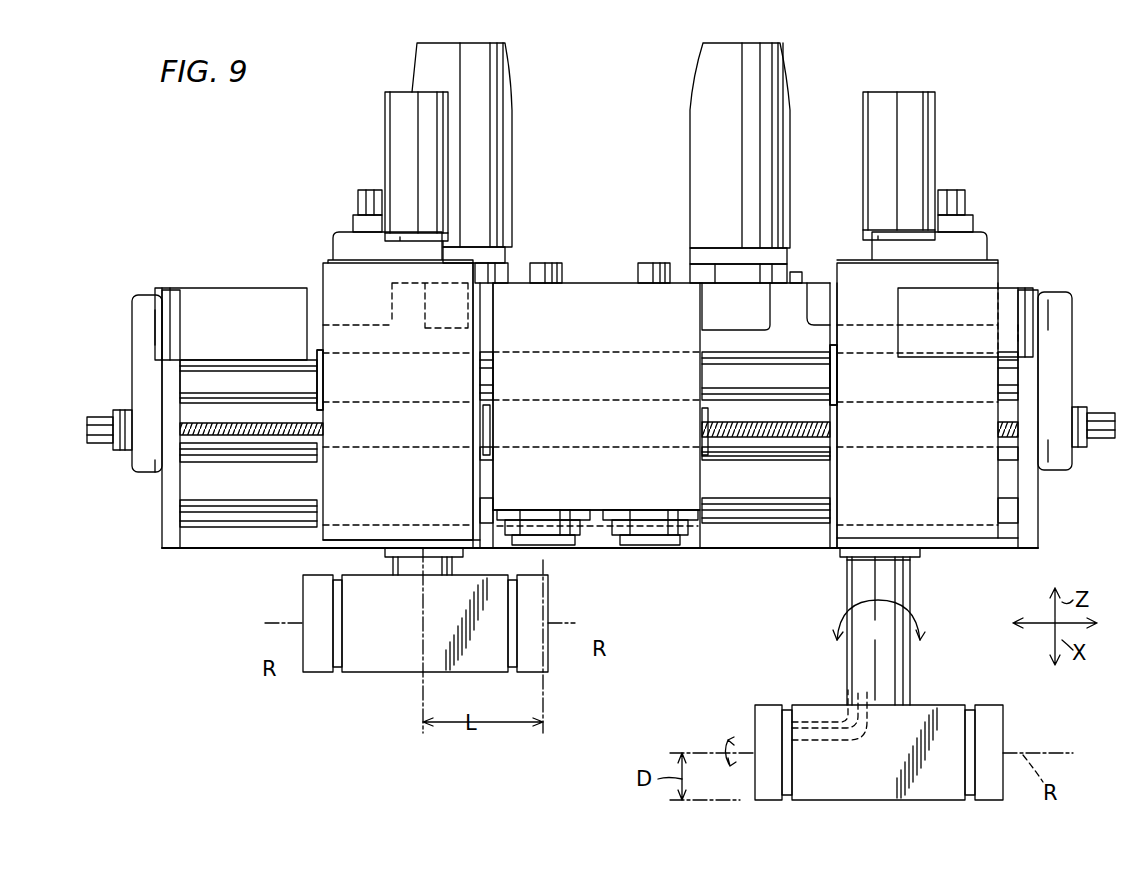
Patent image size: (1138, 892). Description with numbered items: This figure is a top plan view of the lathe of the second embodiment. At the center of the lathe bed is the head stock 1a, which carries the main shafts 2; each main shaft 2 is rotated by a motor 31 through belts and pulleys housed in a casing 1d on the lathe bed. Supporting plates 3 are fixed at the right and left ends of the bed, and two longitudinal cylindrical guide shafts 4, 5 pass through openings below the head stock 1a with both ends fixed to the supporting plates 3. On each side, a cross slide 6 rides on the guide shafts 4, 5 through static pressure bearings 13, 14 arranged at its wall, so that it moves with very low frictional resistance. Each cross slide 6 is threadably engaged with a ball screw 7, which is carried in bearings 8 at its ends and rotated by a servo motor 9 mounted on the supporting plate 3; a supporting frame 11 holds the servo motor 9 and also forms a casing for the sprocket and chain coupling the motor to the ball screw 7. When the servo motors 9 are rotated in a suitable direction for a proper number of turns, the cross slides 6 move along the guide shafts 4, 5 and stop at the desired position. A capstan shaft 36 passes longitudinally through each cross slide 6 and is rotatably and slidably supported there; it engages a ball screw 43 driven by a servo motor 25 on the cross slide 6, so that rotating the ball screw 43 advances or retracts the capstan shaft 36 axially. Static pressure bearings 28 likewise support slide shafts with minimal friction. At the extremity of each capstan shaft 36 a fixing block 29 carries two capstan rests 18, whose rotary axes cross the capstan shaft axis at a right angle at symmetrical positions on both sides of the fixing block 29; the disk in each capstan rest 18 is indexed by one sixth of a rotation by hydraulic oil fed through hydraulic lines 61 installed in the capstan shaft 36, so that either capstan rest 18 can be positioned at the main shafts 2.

The head stock 1a is at (608, 288).
The casing 1d is at (780, 292).
The main shaft 2 is at (553, 542).
The supporting plate 3 is at (170, 489).
The guide shaft 4 is at (180, 507).
The guide shaft 5 is at (188, 380).
The cross slide 6 is at (403, 442).
The ball screw 7 is at (96, 425).
The bearing 8 is at (492, 462).
The servo motor 9 is at (245, 290).
The supporting frame 11 is at (145, 350).
The bearing 13 is at (315, 487).
The bearing 14 is at (315, 370).
The capstan rest 18 is at (318, 665).
The servo motor 25 is at (395, 106).
The bearing 28 is at (888, 557).
The fixing block 29 is at (383, 665).
The motor 31 is at (500, 101).
The capstan shaft 36 is at (405, 566).
The ball screw 43 is at (365, 201).
The hydraulic line 61 is at (822, 720).